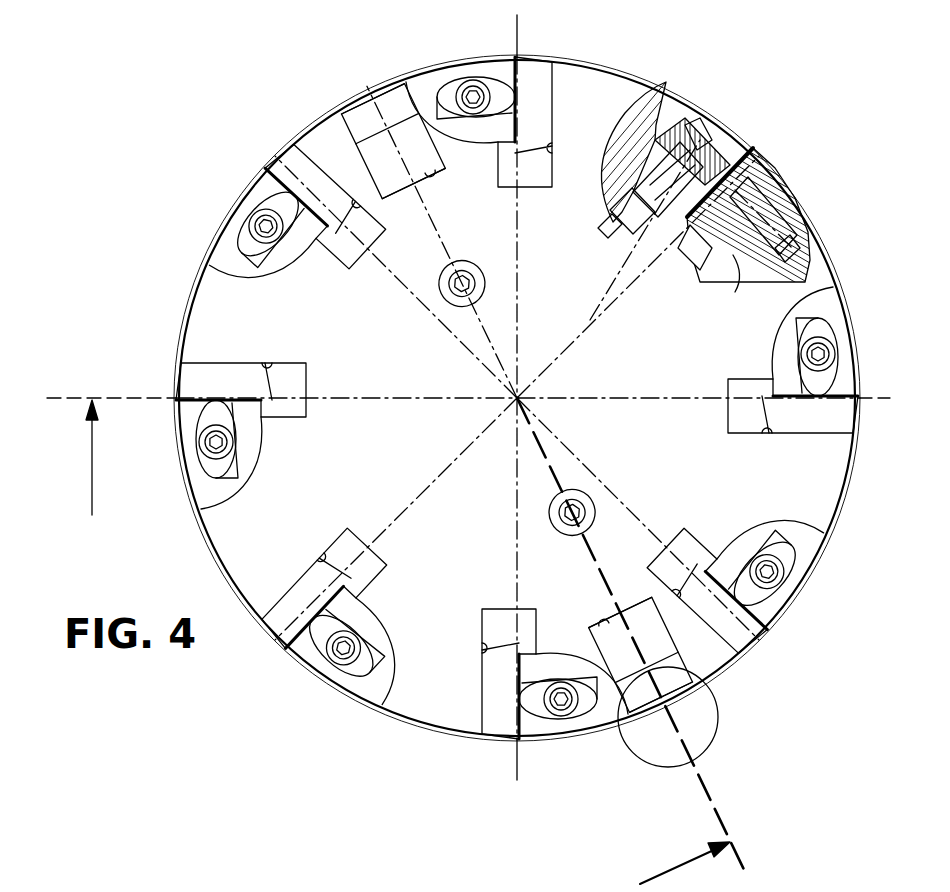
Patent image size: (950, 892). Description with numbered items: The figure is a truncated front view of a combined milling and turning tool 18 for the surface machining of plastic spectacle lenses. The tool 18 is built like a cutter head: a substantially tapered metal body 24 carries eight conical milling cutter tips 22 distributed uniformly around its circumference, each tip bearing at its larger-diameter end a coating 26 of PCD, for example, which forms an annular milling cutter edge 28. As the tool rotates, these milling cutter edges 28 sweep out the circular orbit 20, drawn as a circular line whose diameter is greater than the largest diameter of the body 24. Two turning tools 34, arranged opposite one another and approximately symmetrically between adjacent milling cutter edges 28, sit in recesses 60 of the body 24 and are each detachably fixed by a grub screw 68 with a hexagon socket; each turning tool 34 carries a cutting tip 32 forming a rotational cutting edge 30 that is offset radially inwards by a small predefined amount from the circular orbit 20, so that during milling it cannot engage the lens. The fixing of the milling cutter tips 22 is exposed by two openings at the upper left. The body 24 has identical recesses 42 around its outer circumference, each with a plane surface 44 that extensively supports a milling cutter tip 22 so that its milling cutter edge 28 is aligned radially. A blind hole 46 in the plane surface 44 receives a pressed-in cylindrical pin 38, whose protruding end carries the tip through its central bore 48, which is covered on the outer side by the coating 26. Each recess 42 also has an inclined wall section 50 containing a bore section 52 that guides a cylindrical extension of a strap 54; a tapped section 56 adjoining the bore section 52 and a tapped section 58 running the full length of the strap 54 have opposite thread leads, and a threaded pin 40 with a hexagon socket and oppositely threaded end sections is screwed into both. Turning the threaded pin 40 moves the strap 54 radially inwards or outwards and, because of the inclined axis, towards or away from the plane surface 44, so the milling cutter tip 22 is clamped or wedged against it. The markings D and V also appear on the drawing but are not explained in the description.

The tool 18 is at (224, 134).
The circular orbit 20 is at (235, 208).
The milling cutter tips 22 is at (518, 117).
The tool body 24 is at (566, 386).
The coating 26 is at (735, 150).
The milling cutter edge 28 is at (517, 56).
The rotational cutting edge 30 is at (360, 92).
The cutting tip 32 is at (370, 124).
The turning tool 34 is at (389, 171).
The pin 38 is at (790, 213).
The threaded pin 40 is at (605, 233).
The recesses 42 is at (531, 172).
The plane surface 44 is at (553, 148).
The blind hole 46 is at (800, 252).
The bore 48 is at (740, 266).
The inclined wall section 50 is at (420, 95).
The bore section 52 is at (632, 200).
The strap 54 is at (486, 127).
The tapped section 56 is at (620, 234).
The tapped section 58 is at (702, 120).
The recess 60 is at (426, 176).
The grub screw 68 is at (440, 292).
The detail circle D is at (712, 700).
The section line V is at (12, 386).